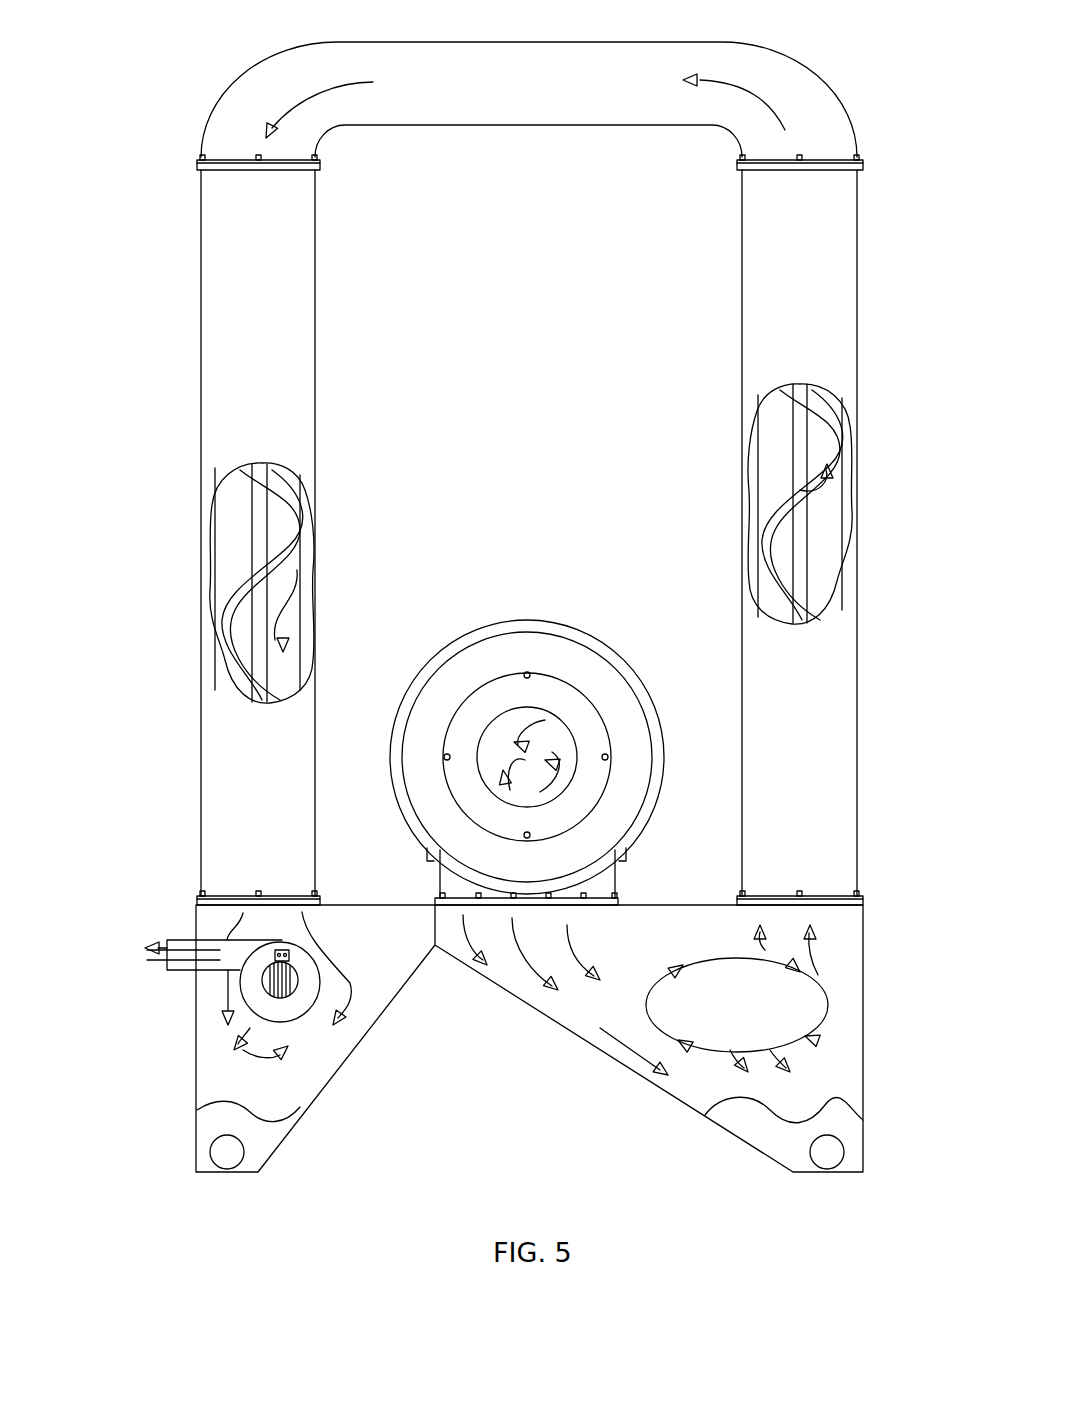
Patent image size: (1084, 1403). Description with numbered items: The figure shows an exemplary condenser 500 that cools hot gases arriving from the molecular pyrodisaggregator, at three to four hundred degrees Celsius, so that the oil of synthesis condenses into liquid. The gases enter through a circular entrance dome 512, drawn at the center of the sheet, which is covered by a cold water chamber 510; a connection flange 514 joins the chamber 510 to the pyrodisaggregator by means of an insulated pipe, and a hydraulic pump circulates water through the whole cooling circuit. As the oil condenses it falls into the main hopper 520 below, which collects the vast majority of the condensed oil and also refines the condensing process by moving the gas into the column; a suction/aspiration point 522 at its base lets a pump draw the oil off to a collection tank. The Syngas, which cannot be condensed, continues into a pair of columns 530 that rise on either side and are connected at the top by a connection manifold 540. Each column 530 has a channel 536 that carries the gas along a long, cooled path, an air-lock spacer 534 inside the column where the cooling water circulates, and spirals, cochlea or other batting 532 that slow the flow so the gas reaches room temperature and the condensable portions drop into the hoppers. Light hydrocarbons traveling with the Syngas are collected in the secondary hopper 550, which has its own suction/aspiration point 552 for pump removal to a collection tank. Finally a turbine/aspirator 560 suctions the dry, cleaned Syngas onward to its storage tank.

The condenser 500 is at (93, 225).
The cold water chamber 510 is at (610, 688).
The entrance dome 512 is at (497, 737).
The connection flange 514 is at (463, 737).
The main hopper 520 is at (842, 982).
The suction/aspiration point 522 is at (830, 1150).
The columns 530 is at (231, 337).
The batting 532 is at (258, 505).
The air-lock spacer 534 is at (212, 568).
The channel 536 is at (280, 515).
The connection manifold 540 is at (578, 97).
The secondary hopper 550 is at (295, 1070).
The suction/aspiration point 552 is at (225, 1153).
The turbine/aspirator 560 is at (250, 983).